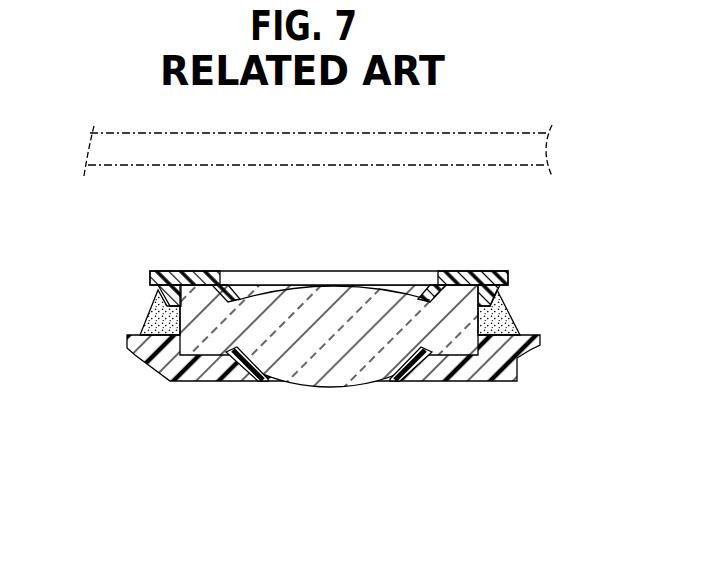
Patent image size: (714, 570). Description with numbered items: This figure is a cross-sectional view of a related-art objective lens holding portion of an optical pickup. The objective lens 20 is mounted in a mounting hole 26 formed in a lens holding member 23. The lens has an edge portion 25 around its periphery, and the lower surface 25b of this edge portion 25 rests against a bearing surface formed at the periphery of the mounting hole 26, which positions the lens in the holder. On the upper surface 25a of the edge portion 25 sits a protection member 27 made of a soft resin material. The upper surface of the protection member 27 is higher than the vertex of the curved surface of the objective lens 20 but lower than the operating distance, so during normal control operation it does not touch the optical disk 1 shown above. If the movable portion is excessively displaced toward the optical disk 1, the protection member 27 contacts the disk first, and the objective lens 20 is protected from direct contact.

The optical disk 1 is at (236, 166).
The objective lens 20 is at (318, 296).
The lens holding member 23 is at (168, 370).
The edge portion 25 is at (152, 318).
The upper surface 25a is at (455, 282).
The lower surface 25b is at (457, 358).
The mounting hole 26 is at (263, 382).
The protection member 27 is at (171, 270).